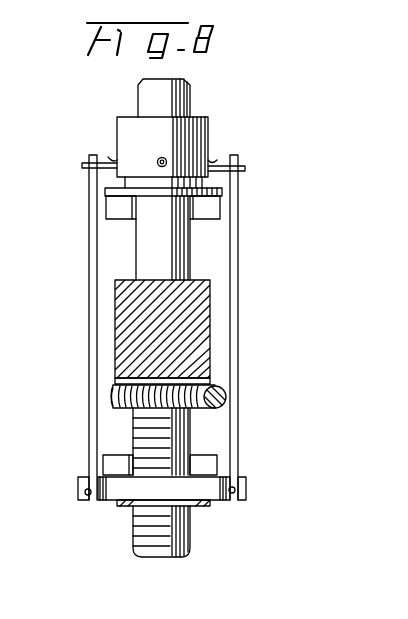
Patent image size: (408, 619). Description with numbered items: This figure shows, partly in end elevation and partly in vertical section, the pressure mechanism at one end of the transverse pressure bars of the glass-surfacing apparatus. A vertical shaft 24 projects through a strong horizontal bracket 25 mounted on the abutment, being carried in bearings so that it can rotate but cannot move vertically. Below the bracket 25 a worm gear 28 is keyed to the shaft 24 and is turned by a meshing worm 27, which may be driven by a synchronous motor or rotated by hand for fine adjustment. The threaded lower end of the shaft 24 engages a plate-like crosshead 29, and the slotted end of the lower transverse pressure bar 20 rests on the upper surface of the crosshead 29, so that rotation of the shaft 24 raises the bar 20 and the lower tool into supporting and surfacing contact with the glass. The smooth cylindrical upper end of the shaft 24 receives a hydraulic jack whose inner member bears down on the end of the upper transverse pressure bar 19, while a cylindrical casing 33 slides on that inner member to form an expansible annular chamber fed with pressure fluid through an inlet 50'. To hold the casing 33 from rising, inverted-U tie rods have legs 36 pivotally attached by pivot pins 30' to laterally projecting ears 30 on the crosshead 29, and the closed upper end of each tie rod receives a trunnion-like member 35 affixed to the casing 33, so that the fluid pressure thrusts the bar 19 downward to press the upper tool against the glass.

The upper transverse pressure bar 19 is at (112, 208).
The lower transverse pressure bar 20 is at (120, 462).
The shaft 24 is at (183, 103).
The bracket 25 is at (205, 348).
The worm 27 is at (226, 403).
The worm gear 28 is at (115, 397).
The crosshead 29 is at (123, 492).
The ears 30 is at (161, 505).
The pivot pins 30' is at (166, 511).
The cylindrical casing 33 is at (197, 132).
The trunnion-like member 35 is at (83, 165).
The tie rod legs 36 is at (93, 290).
The inlet 50' is at (127, 140).